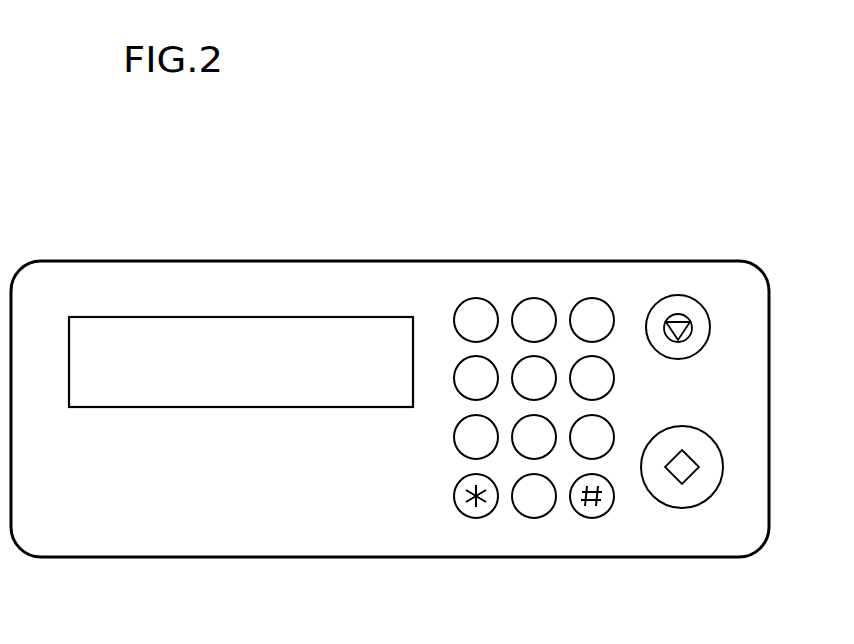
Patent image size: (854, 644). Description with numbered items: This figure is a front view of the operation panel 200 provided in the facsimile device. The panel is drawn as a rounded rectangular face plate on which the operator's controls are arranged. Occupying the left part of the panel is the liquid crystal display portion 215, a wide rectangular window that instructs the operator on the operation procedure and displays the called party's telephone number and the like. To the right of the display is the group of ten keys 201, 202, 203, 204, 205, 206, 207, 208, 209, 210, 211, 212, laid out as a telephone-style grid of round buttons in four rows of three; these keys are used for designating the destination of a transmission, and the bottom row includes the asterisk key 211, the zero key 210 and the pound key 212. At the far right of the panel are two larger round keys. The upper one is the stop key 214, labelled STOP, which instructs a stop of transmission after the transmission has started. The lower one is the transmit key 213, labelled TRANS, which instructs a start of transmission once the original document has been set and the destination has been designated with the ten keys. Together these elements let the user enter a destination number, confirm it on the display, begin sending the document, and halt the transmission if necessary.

The operation panel 200 is at (127, 259).
The ten key 201 is at (487, 327).
The ten key 202 is at (545, 327).
The ten key 203 is at (604, 327).
The ten key 204 is at (486, 385).
The ten key 205 is at (545, 385).
The ten key 206 is at (604, 385).
The ten key 207 is at (486, 445).
The ten key 208 is at (545, 445).
The ten key 209 is at (602, 445).
The ten key 210 is at (534, 507).
The ten key 211 is at (476, 507).
The ten key 212 is at (592, 507).
The transmit key 213 is at (701, 483).
The stop key 214 is at (700, 342).
The liquid crystal display portion 215 is at (222, 317).